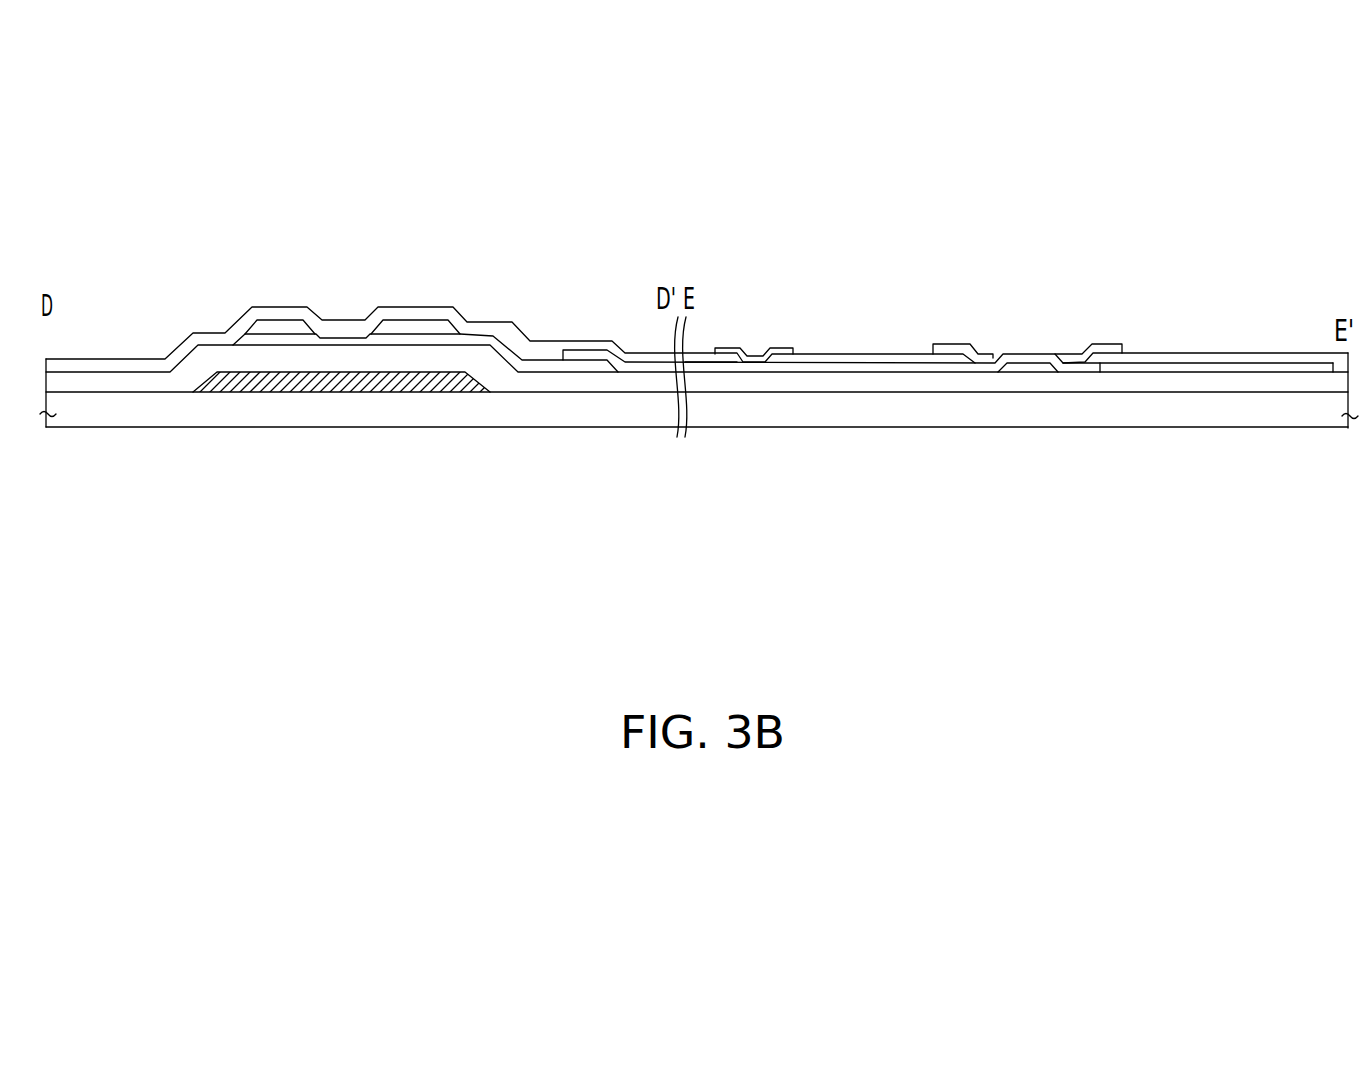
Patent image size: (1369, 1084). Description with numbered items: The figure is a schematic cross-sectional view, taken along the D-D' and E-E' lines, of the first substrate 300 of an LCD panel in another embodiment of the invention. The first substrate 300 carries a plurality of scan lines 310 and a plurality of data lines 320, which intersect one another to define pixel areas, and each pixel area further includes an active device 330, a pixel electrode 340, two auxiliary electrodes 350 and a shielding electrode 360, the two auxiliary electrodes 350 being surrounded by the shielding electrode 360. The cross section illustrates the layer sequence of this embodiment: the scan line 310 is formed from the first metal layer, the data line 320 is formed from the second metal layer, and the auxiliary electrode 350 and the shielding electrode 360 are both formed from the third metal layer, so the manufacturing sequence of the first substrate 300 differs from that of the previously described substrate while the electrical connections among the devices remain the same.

The first substrate 300 is at (1297, 530).
The scan line 310 is at (227, 392).
The data line 320 is at (280, 321).
The active device 330 is at (373, 398).
The pixel electrode 340 is at (715, 367).
The auxiliary electrode 350 is at (775, 353).
The shielding electrode 360 is at (983, 358).